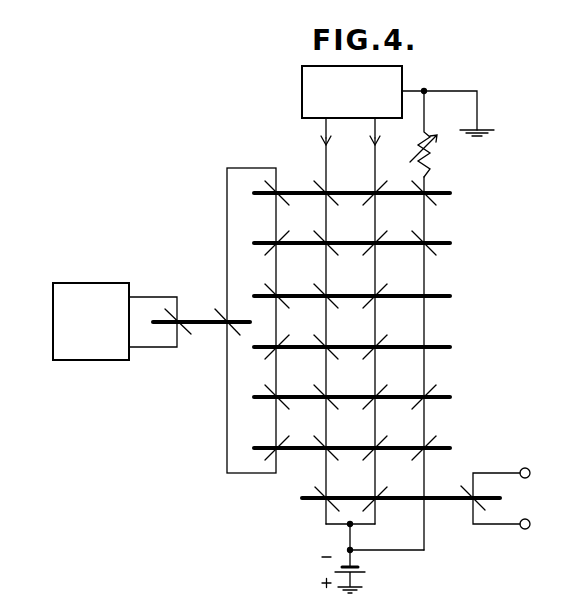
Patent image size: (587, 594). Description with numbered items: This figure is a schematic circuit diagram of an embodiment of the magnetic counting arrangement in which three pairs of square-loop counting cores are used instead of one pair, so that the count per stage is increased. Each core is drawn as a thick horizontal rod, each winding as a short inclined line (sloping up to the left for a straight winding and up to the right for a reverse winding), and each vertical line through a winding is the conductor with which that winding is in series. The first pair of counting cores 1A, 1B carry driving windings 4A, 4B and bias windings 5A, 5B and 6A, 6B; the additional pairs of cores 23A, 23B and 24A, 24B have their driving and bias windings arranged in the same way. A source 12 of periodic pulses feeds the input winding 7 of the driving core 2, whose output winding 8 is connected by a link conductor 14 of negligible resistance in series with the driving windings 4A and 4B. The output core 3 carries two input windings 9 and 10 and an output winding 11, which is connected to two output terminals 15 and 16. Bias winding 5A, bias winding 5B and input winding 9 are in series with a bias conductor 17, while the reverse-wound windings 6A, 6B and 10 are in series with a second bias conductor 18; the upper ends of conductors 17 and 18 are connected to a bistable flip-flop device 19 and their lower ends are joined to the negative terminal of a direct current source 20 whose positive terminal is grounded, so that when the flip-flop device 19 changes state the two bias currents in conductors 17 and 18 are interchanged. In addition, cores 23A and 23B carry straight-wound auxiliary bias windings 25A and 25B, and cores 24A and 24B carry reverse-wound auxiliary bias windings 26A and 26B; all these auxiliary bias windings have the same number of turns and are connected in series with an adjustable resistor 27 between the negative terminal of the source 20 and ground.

The counting core 1A is at (298, 295).
The counting core 1B is at (302, 349).
The driving core 2 is at (206, 320).
The output core 3 is at (415, 500).
The driving winding 4A is at (266, 285).
The driving winding 4B is at (267, 358).
The bias winding 5A is at (325, 287).
The bias winding 5B is at (327, 339).
The bias winding 6A is at (389, 285).
The bias winding 6B is at (386, 338).
The input winding 7 is at (191, 334).
The output winding 8 is at (240, 335).
The input winding 9 is at (330, 505).
The input winding 10 is at (388, 489).
The output winding 11 is at (478, 510).
The source of periodic waves or pulses 12 is at (129, 360).
The link conductor 14 is at (227, 220).
The output terminal 15 is at (531, 473).
The output terminal 16 is at (531, 524).
The bias conductor 17 is at (327, 370).
The bias conductor 18 is at (375, 370).
The bistable flip-flop device 19 is at (402, 66).
The direct current source 20 is at (357, 568).
The counting core 23A is at (300, 192).
The counting core 23B is at (305, 243).
The counting core 24A is at (310, 398).
The counting core 24B is at (304, 449).
The auxiliary bias winding 25A is at (436, 205).
The auxiliary bias winding 25B is at (436, 255).
The auxiliary bias winding 26A is at (442, 389).
The auxiliary bias winding 26B is at (436, 438).
The adjustable resistor 27 is at (411, 134).